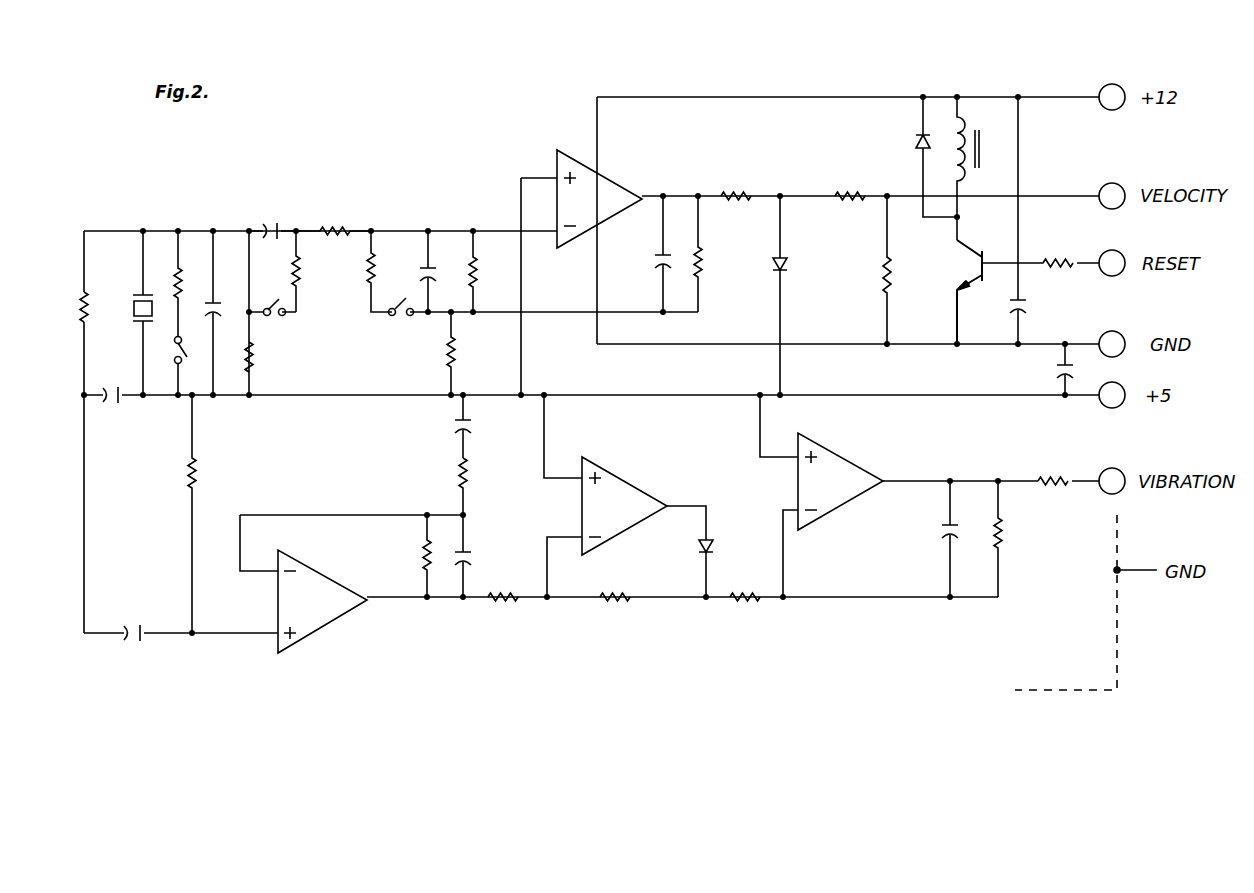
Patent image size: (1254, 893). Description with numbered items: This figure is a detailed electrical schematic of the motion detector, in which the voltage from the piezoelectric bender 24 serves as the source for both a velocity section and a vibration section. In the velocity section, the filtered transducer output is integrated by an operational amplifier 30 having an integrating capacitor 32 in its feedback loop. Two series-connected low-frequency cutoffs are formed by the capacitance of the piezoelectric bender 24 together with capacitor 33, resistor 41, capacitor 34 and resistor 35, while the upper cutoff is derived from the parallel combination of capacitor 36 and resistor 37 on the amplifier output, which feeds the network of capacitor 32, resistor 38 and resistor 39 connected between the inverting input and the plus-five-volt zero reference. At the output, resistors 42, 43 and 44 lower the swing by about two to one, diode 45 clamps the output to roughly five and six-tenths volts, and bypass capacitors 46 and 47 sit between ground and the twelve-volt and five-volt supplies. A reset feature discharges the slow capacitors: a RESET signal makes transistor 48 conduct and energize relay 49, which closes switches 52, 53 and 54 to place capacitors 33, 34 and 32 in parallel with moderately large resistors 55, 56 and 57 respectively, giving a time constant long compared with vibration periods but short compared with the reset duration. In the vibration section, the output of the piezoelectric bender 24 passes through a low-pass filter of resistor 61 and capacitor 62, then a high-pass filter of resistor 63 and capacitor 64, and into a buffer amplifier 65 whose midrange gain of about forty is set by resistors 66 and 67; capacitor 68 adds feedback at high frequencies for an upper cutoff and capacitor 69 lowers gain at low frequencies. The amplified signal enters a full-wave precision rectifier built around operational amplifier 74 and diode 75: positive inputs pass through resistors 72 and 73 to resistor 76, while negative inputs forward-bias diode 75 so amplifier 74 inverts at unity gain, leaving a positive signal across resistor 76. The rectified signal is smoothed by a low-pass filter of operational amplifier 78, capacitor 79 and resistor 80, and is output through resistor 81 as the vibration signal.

The piezoelectric bender 24 is at (127, 303).
The operational amplifier 30 is at (572, 148).
The integrating capacitor 32 is at (422, 263).
The capacitor 33 is at (216, 290).
The capacitor 34 is at (260, 217).
The resistor 35 is at (333, 227).
The capacitor 36 is at (648, 262).
The resistor 37 is at (706, 262).
The resistor 38 is at (487, 279).
The resistor 39 is at (459, 357).
The resistor 41 is at (258, 362).
The resistor 42 is at (736, 190).
The resistor 43 is at (848, 192).
The resistor 44 is at (878, 282).
The diode 45 is at (790, 260).
The bypass capacitor 46 is at (1030, 308).
The bypass capacitor 47 is at (1048, 378).
The transistor 48 is at (984, 254).
The relay 49 is at (980, 150).
The switch 52 is at (170, 353).
The switch 53 is at (276, 321).
The switch 54 is at (398, 322).
The resistor 55 is at (197, 275).
The resistor 56 is at (290, 273).
The resistor 57 is at (362, 281).
The resistor 61 is at (84, 310).
The capacitor 62 is at (111, 405).
The resistor 63 is at (200, 470).
The capacitor 64 is at (133, 645).
The buffer amplifier 65 is at (322, 628).
The resistor 66 is at (418, 558).
The resistor 67 is at (470, 474).
The capacitor 68 is at (472, 552).
The capacitor 69 is at (472, 428).
The resistor 72 is at (506, 605).
The resistor 73 is at (610, 605).
The operational amplifier 74 is at (624, 478).
The diode 75 is at (714, 544).
The resistor 76 is at (740, 605).
The operational amplifier 78 is at (842, 452).
The capacitor 79 is at (935, 534).
The resistor 80 is at (1006, 535).
The resistor 81 is at (1054, 472).